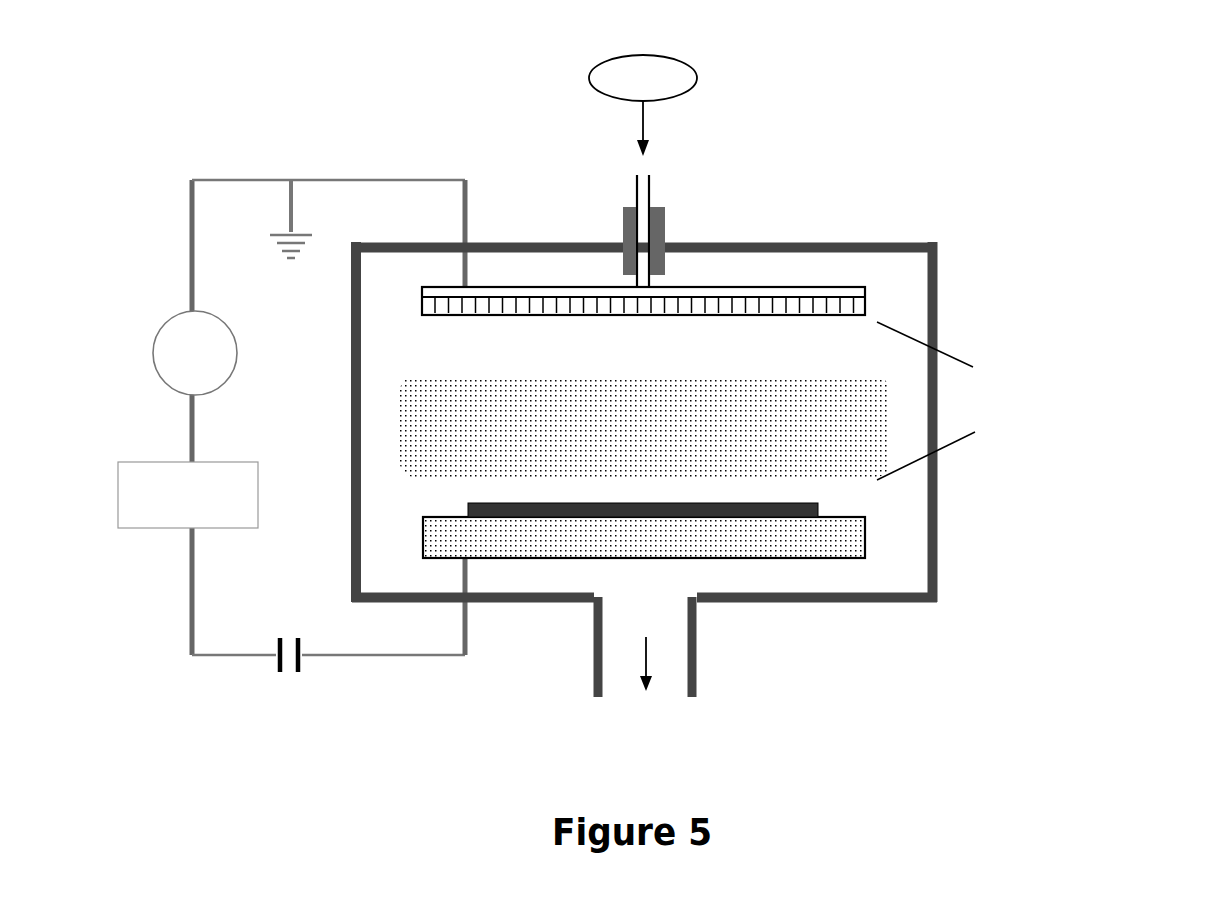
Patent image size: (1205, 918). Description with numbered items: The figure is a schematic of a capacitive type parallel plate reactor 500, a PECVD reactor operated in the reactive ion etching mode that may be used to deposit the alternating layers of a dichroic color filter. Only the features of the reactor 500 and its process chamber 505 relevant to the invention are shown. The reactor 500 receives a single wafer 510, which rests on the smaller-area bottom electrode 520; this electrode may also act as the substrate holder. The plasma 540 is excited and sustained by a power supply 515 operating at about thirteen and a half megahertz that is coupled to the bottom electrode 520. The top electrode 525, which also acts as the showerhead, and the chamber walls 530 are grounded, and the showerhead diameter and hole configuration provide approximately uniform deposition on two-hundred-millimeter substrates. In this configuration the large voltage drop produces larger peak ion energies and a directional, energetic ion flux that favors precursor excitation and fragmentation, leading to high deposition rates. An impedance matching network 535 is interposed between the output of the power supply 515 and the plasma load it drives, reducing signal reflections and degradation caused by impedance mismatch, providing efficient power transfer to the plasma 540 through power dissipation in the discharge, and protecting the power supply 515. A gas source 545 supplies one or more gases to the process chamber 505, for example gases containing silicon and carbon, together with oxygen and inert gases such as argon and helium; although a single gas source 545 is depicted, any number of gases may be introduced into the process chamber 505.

The parallel plate reactor 500 is at (627, 386).
The process chamber 505 is at (668, 456).
The wafer 510 is at (818, 510).
The power supply 515 is at (150, 355).
The bottom electrode 520 is at (422, 545).
The top electrode 525 is at (422, 300).
The chamber walls 530 is at (930, 600).
The impedance matching network 535 is at (118, 508).
The plasma 540 is at (622, 445).
The gas source 545 is at (697, 79).